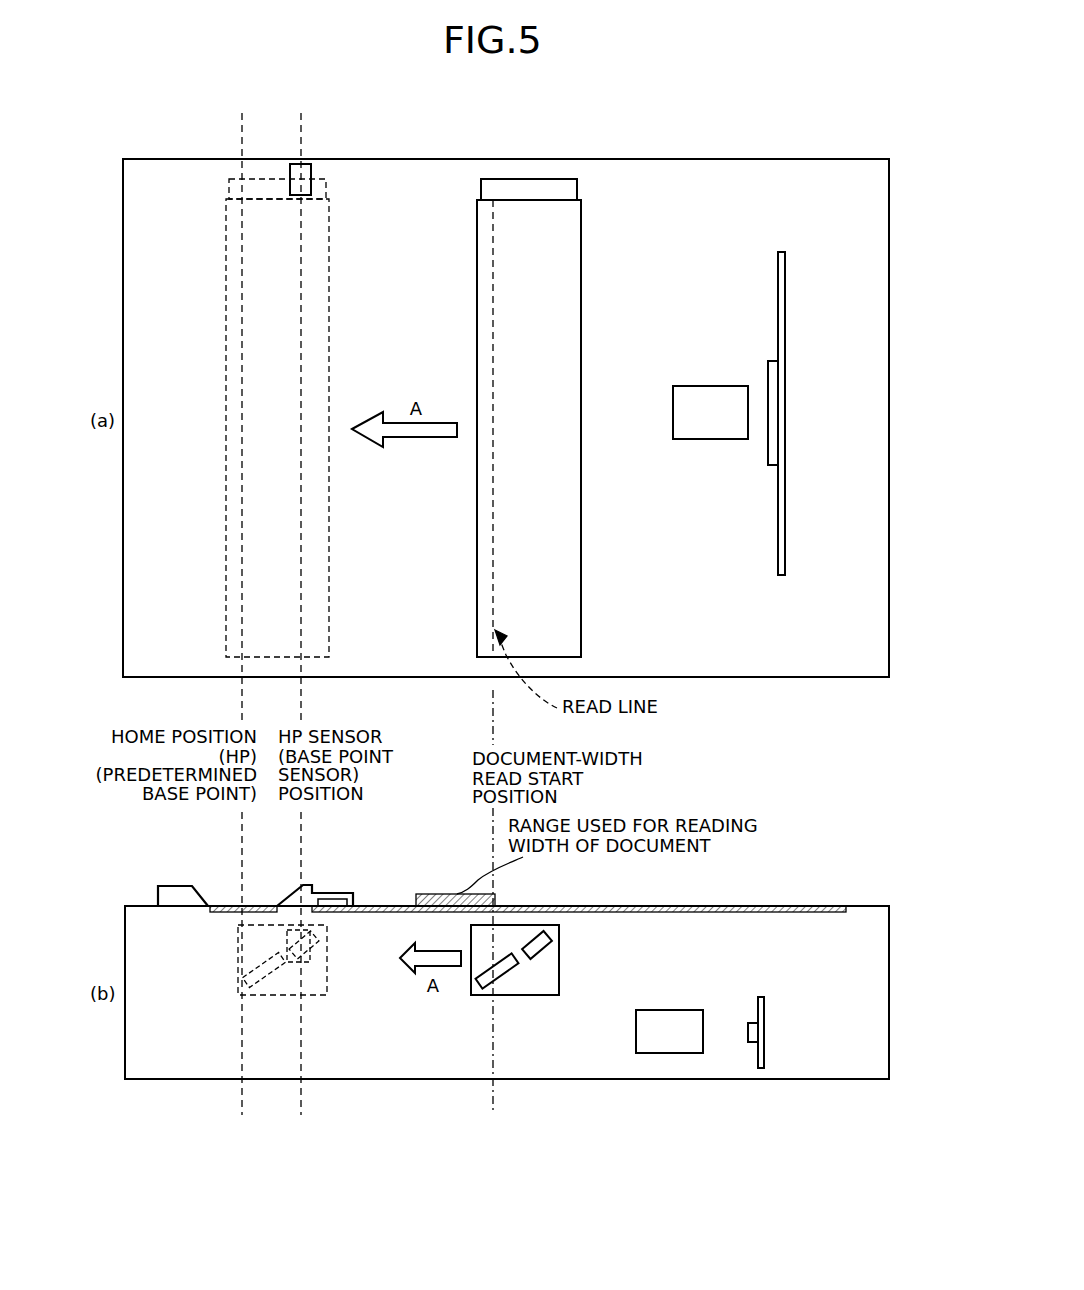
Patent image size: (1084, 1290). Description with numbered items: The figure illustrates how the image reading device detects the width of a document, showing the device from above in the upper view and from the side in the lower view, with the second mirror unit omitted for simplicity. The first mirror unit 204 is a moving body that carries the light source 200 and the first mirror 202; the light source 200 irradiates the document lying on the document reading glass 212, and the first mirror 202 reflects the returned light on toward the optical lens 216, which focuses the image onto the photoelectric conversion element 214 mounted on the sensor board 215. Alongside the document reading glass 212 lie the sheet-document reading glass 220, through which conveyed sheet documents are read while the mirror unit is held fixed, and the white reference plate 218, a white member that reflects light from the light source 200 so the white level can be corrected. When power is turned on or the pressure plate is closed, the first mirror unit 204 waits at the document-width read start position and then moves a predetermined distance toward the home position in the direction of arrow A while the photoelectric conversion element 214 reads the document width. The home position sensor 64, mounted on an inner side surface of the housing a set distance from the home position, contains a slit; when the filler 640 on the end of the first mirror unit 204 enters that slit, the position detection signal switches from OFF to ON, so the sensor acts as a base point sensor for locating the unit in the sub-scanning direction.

The home position sensor 64 is at (311, 170).
The light source 200 is at (543, 950).
The first mirror 202 is at (503, 982).
The first mirror unit 204 is at (329, 263).
The document reading glass 212 is at (804, 905).
The photoelectric conversion element 214 is at (768, 370).
The sensor board 215 is at (778, 280).
The optical lens 216 is at (707, 439).
The white reference plate 218 is at (330, 900).
The sheet-document reading glass 220 is at (224, 903).
The filler 640 is at (530, 178).